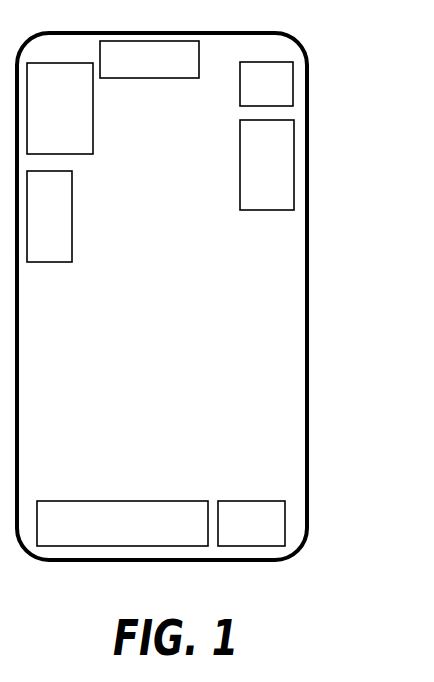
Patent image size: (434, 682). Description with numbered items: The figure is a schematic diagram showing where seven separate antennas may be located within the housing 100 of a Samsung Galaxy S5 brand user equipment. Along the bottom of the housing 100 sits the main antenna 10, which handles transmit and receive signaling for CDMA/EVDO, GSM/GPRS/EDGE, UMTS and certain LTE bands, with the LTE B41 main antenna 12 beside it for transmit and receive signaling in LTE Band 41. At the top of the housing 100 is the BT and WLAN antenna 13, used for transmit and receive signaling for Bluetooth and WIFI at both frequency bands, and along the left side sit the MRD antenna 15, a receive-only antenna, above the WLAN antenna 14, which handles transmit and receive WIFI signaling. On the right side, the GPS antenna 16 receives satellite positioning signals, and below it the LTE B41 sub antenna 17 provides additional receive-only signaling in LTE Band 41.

The housing 100 is at (208, 281).
The main antenna 10 is at (122, 523).
The LTE B41 main antenna 12 is at (251, 523).
The BT and WLAN antenna 13 is at (149, 59).
The WLAN antenna 14 is at (49, 216).
The MRD antenna 15 is at (60, 108).
The GPS antenna 16 is at (266, 84).
The LTE B41 sub antenna 17 is at (267, 165).